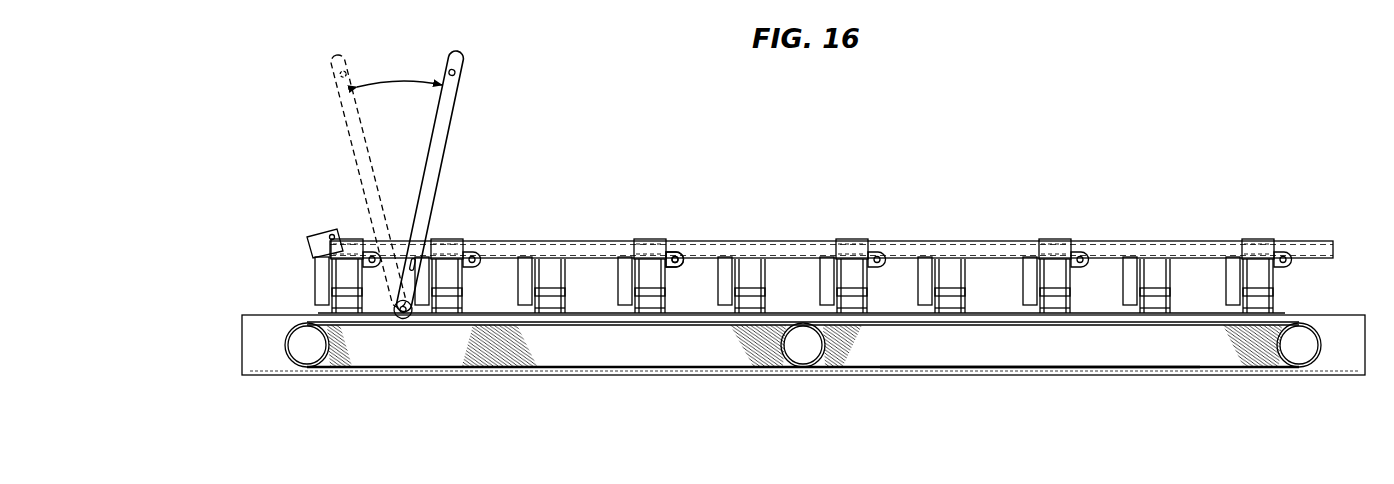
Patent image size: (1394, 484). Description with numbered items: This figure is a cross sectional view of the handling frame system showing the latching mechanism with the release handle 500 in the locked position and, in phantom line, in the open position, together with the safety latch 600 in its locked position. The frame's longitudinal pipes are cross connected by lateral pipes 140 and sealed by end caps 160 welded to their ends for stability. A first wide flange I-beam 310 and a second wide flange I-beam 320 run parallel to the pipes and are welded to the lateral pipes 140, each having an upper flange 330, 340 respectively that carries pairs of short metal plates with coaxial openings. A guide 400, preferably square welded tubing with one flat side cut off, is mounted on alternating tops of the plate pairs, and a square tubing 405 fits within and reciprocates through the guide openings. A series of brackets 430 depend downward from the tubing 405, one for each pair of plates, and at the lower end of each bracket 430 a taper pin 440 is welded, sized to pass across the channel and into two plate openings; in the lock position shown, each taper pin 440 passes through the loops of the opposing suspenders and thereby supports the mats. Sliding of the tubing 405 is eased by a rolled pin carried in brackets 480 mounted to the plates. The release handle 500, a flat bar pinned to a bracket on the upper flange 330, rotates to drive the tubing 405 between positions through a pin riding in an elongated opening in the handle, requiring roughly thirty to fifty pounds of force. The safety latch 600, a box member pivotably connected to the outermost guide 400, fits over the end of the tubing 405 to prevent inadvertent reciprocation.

The lateral pipes 140 is at (288, 361).
The end caps 160 is at (243, 317).
The first wide flange I-beam 310 is at (445, 367).
The second wide flange I-beam 320 is at (957, 367).
The upper flange 330 is at (518, 325).
The upper flange 340 is at (1018, 323).
The guide 400 is at (645, 240).
The tubing 405 is at (805, 241).
The bracket 430 is at (1029, 262).
The taper pin 440 is at (1056, 290).
The bracket 480 is at (679, 251).
The release handle 500 is at (452, 123).
The safety latch 600 is at (316, 228).